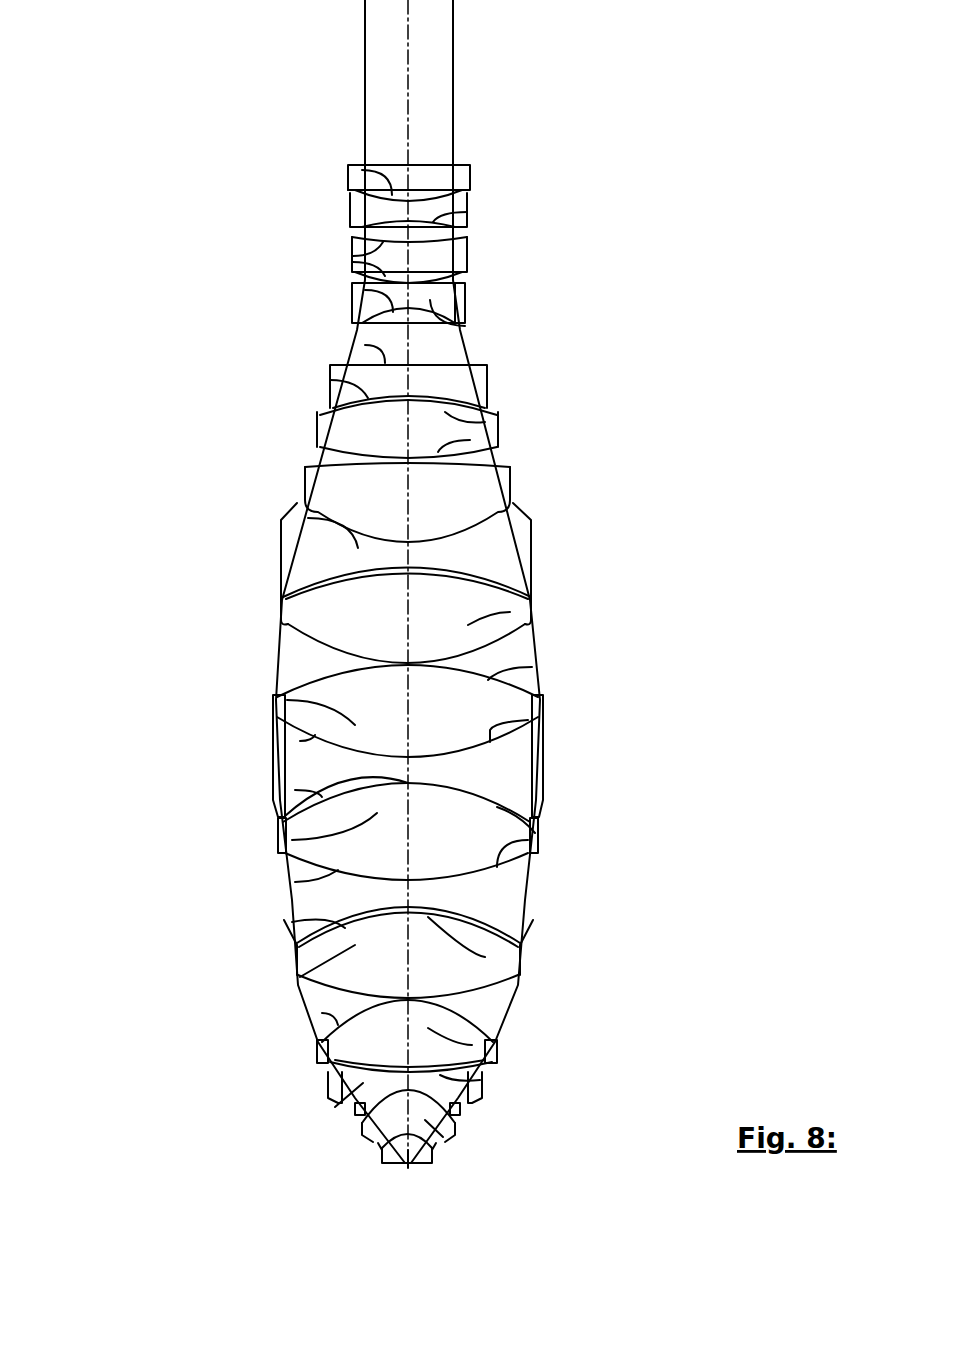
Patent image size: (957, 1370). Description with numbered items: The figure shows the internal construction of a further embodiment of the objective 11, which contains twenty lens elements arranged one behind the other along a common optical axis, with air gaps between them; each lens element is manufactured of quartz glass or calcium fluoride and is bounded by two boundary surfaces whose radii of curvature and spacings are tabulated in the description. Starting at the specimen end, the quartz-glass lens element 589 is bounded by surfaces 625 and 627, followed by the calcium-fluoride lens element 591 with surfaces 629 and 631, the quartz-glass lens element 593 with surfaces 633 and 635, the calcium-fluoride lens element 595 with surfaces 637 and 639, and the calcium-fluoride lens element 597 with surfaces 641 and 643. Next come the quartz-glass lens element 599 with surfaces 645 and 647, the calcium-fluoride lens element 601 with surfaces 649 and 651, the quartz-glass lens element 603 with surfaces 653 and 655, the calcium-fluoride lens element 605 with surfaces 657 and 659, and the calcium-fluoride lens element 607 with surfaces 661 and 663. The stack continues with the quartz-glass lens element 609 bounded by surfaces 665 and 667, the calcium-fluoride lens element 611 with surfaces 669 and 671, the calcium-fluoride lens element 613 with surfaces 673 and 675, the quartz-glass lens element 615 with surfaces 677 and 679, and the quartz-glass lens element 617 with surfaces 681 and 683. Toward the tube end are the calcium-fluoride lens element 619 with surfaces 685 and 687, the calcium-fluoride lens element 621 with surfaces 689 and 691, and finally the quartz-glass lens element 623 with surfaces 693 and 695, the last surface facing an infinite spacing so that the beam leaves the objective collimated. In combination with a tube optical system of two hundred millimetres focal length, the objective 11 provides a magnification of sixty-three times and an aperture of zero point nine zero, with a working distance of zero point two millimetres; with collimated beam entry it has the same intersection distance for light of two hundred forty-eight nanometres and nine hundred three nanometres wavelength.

The objective 11 is at (160, 310).
The lens element 589 is at (398, 1168).
The lens element 591 is at (450, 1143).
The lens element 593 is at (340, 1098).
The lens element 595 is at (472, 1045).
The lens element 597 is at (298, 975).
The lens element 599 is at (482, 888).
The lens element 601 is at (335, 838).
The lens element 603 is at (478, 777).
The lens element 605 is at (295, 703).
The lens element 607 is at (528, 614).
The lens element 609 is at (350, 563).
The lens element 611 is at (440, 490).
The lens element 613 is at (377, 440).
The lens element 615 is at (440, 385).
The lens element 617 is at (393, 295).
The lens element 619 is at (430, 263).
The lens element 621 is at (377, 212).
The lens element 623 is at (430, 177).
The boundary surface 625 is at (412, 1170).
The boundary surface 627 is at (433, 1152).
The boundary surface 629 is at (383, 1143).
The boundary surface 631 is at (362, 1118).
The boundary surface 633 is at (460, 1113).
The boundary surface 635 is at (477, 1078).
The boundary surface 637 is at (318, 1055).
The boundary surface 639 is at (322, 1015).
The boundary surface 641 is at (468, 992).
The boundary surface 643 is at (485, 945).
The boundary surface 645 is at (290, 924).
The boundary surface 647 is at (325, 880).
The boundary surface 649 is at (505, 830).
The boundary surface 651 is at (528, 830).
The boundary surface 653 is at (295, 790).
The boundary surface 655 is at (300, 741).
The boundary surface 657 is at (530, 718).
The boundary surface 659 is at (532, 667).
The boundary surface 661 is at (320, 650).
The boundary surface 663 is at (290, 613).
The boundary surface 665 is at (458, 572).
The boundary surface 667 is at (520, 512).
The boundary surface 669 is at (300, 502).
The boundary surface 671 is at (330, 465).
The boundary surface 673 is at (438, 452).
The boundary surface 675 is at (485, 413).
The boundary surface 677 is at (368, 398).
The boundary surface 679 is at (365, 345).
The boundary surface 681 is at (433, 318).
The boundary surface 683 is at (435, 300).
The boundary surface 685 is at (360, 267).
The boundary surface 687 is at (382, 255).
The boundary surface 689 is at (433, 222).
The boundary surface 691 is at (465, 200).
The boundary surface 693 is at (352, 167).
The boundary surface 695 is at (392, 160).